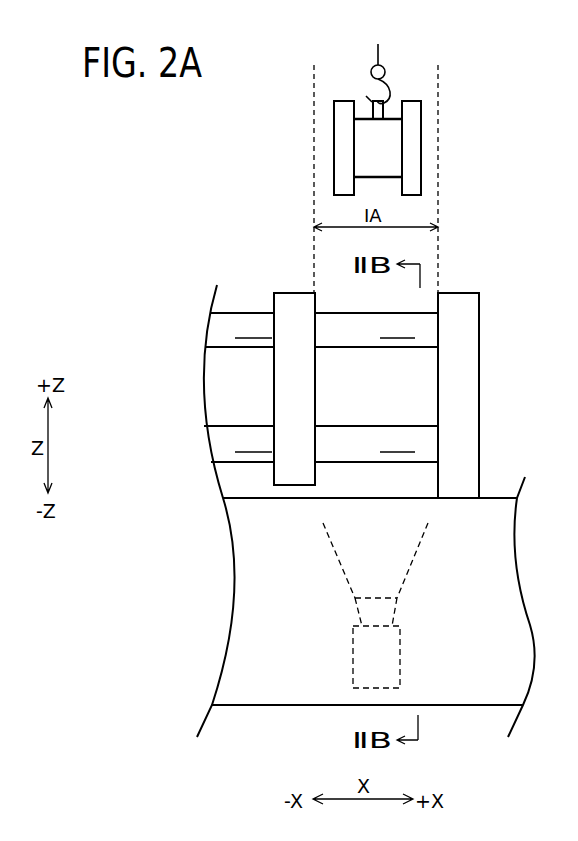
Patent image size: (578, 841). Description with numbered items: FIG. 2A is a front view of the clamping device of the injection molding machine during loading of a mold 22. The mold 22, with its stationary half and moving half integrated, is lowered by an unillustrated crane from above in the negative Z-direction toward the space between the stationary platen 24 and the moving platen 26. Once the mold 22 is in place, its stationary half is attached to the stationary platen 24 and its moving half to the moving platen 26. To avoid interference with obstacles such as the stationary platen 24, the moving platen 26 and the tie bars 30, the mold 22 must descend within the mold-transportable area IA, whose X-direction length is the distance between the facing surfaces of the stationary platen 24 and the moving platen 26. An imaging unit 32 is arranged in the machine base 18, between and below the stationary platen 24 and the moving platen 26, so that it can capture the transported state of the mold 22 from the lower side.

The machine base 18 is at (253, 611).
The mold 22 is at (421, 134).
The stationary platen 24 is at (458, 293).
The moving platen 26 is at (295, 293).
The tie bars 30 is at (222, 333).
The imaging unit 32 is at (401, 652).